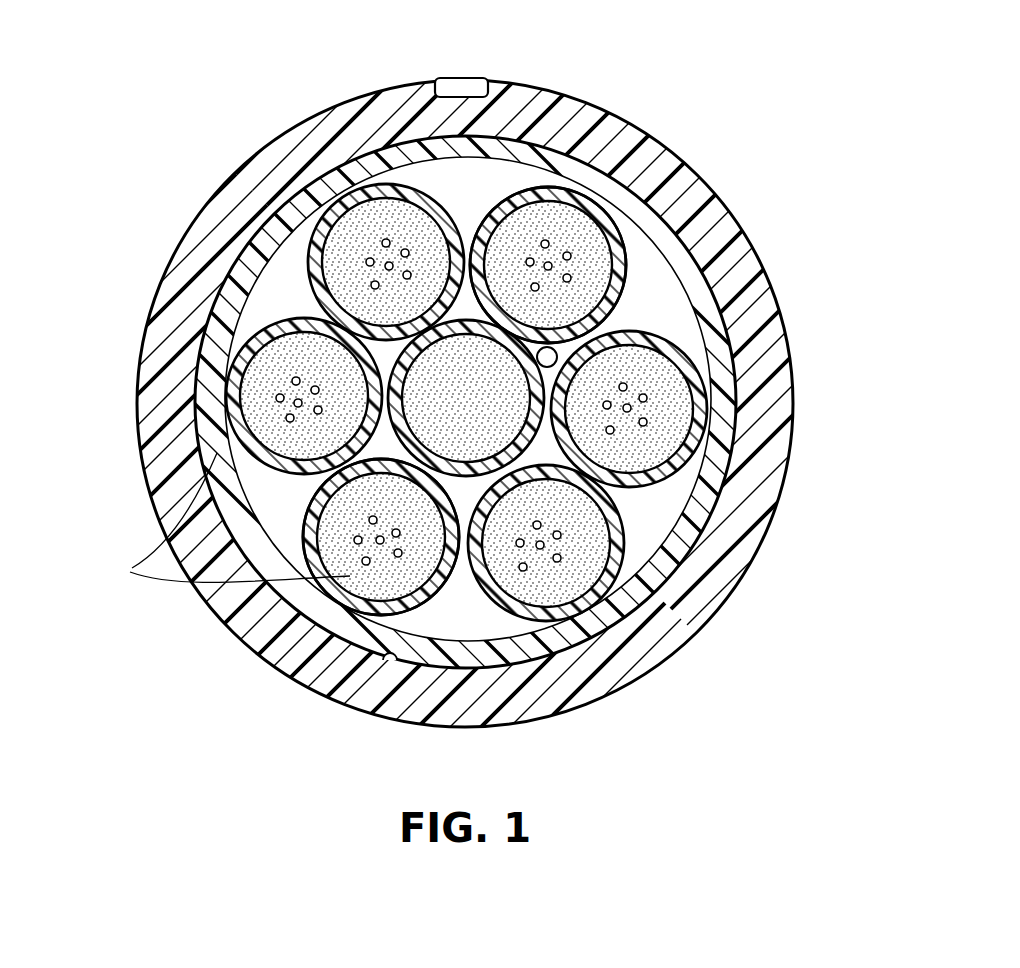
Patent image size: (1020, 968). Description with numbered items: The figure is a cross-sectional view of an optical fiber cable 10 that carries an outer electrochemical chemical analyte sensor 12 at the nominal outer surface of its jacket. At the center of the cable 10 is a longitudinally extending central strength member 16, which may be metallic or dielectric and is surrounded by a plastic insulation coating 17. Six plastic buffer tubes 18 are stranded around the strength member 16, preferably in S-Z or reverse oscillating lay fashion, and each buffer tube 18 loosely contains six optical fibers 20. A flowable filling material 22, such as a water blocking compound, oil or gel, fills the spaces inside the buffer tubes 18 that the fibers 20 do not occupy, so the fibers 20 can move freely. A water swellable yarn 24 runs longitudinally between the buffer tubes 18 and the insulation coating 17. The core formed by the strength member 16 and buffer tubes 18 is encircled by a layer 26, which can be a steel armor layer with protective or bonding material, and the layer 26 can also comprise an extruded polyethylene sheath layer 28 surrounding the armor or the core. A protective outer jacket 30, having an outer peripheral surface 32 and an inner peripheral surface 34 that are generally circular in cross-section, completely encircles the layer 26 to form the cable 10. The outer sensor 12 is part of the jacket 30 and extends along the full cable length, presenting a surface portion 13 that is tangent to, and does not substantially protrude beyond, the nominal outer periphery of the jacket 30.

The optical fiber cable 10 is at (510, 484).
The outer electrochemical chemical analyte sensor 12 is at (462, 87).
The surface portion 13 is at (448, 78).
The central strength member 16 is at (472, 445).
The plastic insulation coating 17 is at (465, 332).
The buffer tubes 18 is at (595, 588).
The optical fibers 20 is at (647, 424).
The flowable filling material 22 is at (300, 605).
The water swellable yarn 24 is at (554, 352).
The layer 26 is at (600, 207).
The sheath layer 28 is at (673, 168).
The jacket 30 is at (730, 252).
The outer peripheral surface 32 is at (793, 392).
The inner peripheral surface 34 is at (377, 660).